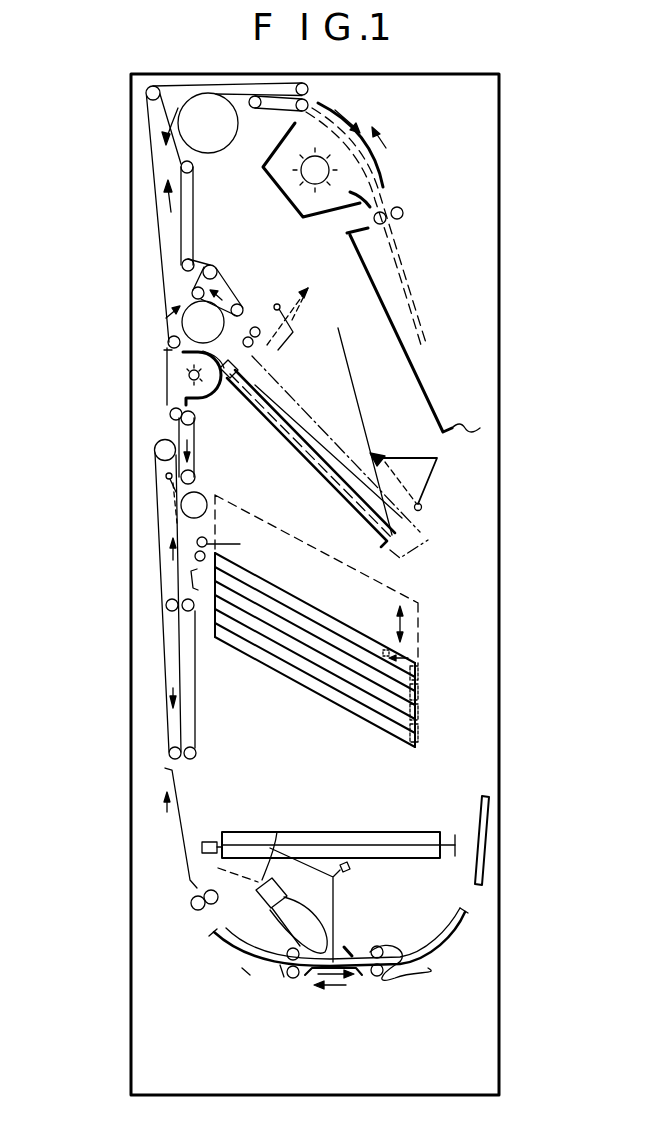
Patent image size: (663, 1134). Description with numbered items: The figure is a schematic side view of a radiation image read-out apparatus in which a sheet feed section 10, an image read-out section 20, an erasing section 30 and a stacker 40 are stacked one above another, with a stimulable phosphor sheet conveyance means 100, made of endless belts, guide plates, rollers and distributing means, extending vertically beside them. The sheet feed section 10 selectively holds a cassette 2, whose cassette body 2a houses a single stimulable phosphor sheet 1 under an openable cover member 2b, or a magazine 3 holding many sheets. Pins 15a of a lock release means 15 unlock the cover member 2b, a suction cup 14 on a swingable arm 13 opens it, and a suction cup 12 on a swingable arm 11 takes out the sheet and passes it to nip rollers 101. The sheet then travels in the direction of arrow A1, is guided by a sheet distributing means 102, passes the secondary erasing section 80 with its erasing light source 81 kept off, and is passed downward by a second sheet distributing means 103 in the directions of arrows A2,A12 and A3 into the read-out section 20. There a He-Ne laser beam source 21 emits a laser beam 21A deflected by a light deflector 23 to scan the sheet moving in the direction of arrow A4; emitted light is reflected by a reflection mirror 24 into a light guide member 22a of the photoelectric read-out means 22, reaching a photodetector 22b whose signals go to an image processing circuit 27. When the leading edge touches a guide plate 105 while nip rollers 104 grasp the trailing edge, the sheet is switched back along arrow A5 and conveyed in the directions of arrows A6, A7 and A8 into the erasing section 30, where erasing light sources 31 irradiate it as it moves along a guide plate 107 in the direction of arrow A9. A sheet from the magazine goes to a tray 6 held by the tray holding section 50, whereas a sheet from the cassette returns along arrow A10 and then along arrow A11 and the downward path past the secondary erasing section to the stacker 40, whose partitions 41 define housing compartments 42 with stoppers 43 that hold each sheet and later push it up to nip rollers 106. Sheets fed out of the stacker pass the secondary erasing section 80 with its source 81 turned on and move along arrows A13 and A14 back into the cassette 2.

The stimulable phosphor sheet conveyance means 100 is at (151, 158).
The arrow A11 is at (152, 116).
The arrow A8 is at (168, 200).
The erasing section 30 is at (284, 204).
The erasing light source 31 is at (318, 184).
The guide plate 107 is at (382, 180).
The arrow A9 is at (348, 118).
The arrow A10 is at (383, 142).
The tray holding section 50 is at (477, 313).
The tray 6 is at (480, 428).
The arrow A1 is at (228, 282).
The sheet distributing means 102 is at (182, 300).
The arrow A14 is at (165, 320).
The nip rollers 101 is at (256, 326).
The erasing light source 81 is at (178, 365).
The secondary erasing section 80 is at (168, 386).
The lock release means 15 is at (167, 358).
The pins 15a is at (230, 384).
The arrows A2,A12 is at (154, 447).
The sheet distributing means 103 is at (178, 496).
The arrow A7 is at (168, 552).
The arrow A13 is at (183, 488).
The nip rollers 106 is at (222, 552).
The arrow A3 is at (172, 698).
The arrow A6 is at (180, 800).
The cassette 2 is at (283, 466).
The stimulable phosphor sheet 1 is at (302, 400).
The cassette body 2a is at (328, 480).
The cover member 2b is at (360, 420).
The swingable arm 11 is at (296, 342).
The suction cup 12 is at (300, 365).
The swingable arm 13 is at (440, 462).
The suction cup 14 is at (383, 456).
The magazine 3 is at (420, 548).
The sheet feed section 10 is at (450, 517).
The stacker 40 is at (445, 681).
The partitions 41 is at (295, 608).
The stimulable phosphor sheet housing compartments 42 is at (332, 640).
The stopper 43 is at (420, 664).
The image read-out section 20 is at (454, 794).
The He-Ne laser beam source 21 is at (340, 830).
The laser beam 21A is at (395, 830).
The image processing circuit 27 is at (212, 840).
The photodetector 22b is at (265, 835).
The photoelectric read-out means 22 is at (247, 906).
The light guide member 22a is at (252, 960).
The light deflector 23 is at (340, 876).
The reflection mirror 24 is at (350, 944).
The nip rollers 104 is at (418, 968).
The guide plate 105 is at (488, 860).
The arrow A4 is at (352, 985).
The arrow A5 is at (328, 988).